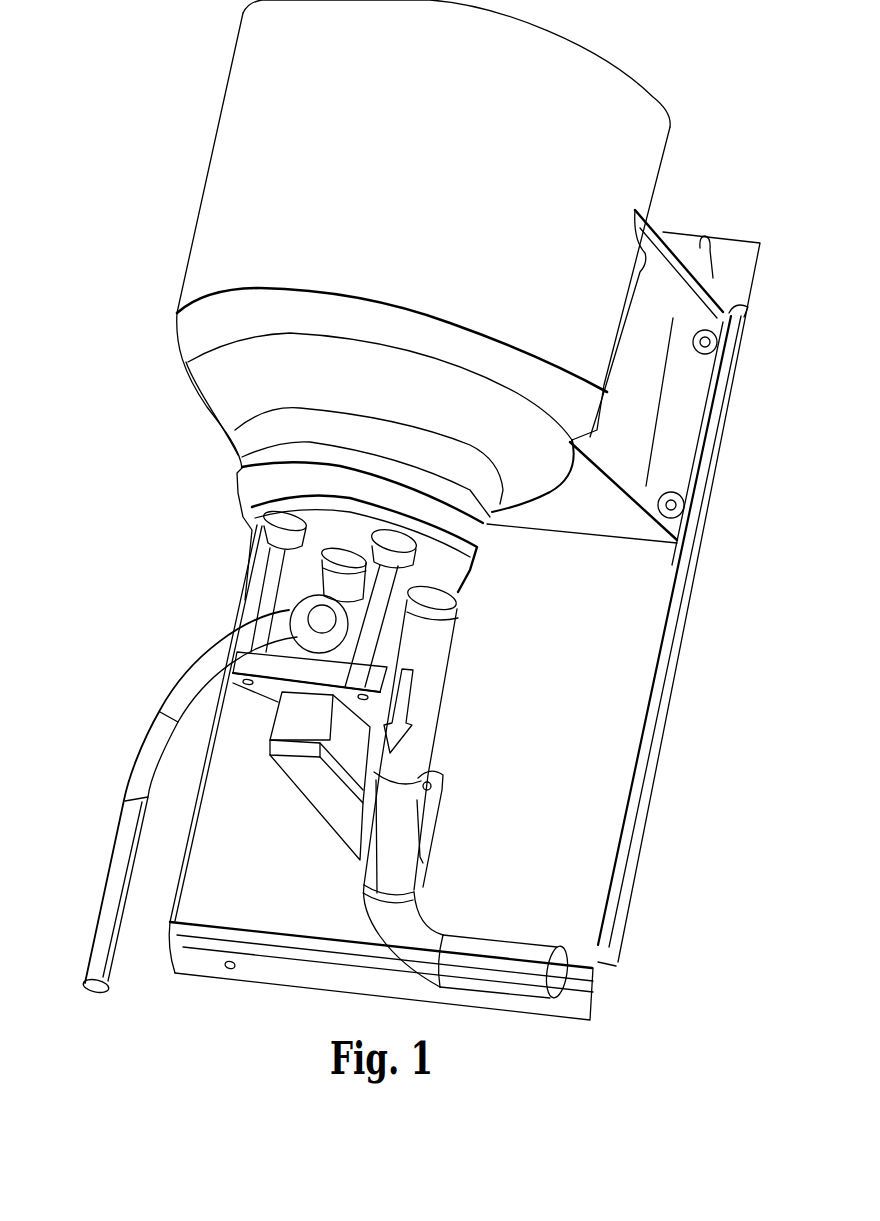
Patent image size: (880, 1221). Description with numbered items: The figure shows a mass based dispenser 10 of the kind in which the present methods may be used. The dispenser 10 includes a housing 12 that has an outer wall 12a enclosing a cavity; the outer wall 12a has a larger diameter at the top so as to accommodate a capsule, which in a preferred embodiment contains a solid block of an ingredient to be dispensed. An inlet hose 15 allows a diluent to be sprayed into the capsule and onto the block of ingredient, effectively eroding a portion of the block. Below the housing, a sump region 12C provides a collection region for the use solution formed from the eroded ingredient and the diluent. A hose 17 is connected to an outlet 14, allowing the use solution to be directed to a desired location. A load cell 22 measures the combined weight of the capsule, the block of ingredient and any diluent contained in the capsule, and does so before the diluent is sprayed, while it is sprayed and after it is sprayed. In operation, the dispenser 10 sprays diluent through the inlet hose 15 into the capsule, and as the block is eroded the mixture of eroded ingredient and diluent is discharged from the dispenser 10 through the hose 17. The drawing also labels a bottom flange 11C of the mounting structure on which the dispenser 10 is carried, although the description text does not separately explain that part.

The dispenser 10 is at (134, 332).
The mounting plate bottom flange 11C is at (342, 978).
The housing 12 is at (205, 178).
The outer wall 12a is at (378, 84).
The sump region 12C is at (240, 473).
The outlet 14 is at (451, 603).
The inlet hose 15 is at (153, 722).
The hose 17 is at (438, 713).
The load cell 22 is at (290, 722).